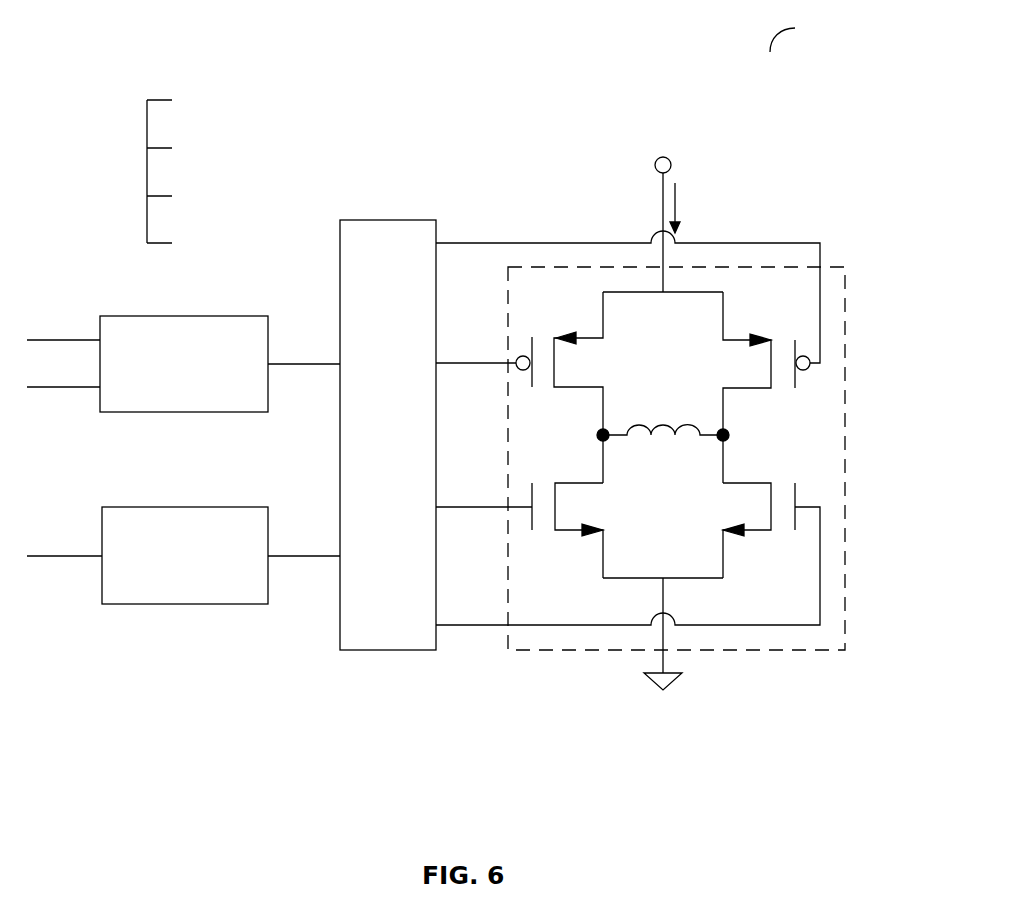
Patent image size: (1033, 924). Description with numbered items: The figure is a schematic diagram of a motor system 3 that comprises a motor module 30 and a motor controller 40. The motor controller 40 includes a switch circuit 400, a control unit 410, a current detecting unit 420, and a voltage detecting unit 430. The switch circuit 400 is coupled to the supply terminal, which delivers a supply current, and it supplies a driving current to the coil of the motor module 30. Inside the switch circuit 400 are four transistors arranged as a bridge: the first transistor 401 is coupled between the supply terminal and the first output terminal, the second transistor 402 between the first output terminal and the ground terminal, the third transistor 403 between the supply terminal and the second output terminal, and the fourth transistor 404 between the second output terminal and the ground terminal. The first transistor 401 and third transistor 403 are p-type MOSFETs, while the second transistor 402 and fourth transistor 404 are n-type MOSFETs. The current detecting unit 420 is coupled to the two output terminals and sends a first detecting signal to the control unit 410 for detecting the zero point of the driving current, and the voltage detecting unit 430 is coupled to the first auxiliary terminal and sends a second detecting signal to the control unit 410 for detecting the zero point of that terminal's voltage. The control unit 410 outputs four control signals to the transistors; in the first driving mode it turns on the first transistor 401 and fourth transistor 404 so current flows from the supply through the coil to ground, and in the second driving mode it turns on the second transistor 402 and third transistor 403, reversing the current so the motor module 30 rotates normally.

The motor system 3 is at (795, 35).
The motor module 30 is at (663, 417).
The motor controller 40 is at (147, 172).
The switch circuit 400 is at (640, 421).
The first transistor 401 is at (590, 337).
The second transistor 402 is at (590, 483).
The third transistor 403 is at (735, 337).
The fourth transistor 404 is at (736, 483).
The control unit 410 is at (388, 220).
The current detecting unit 420 is at (183, 316).
The voltage detecting unit 430 is at (183, 507).